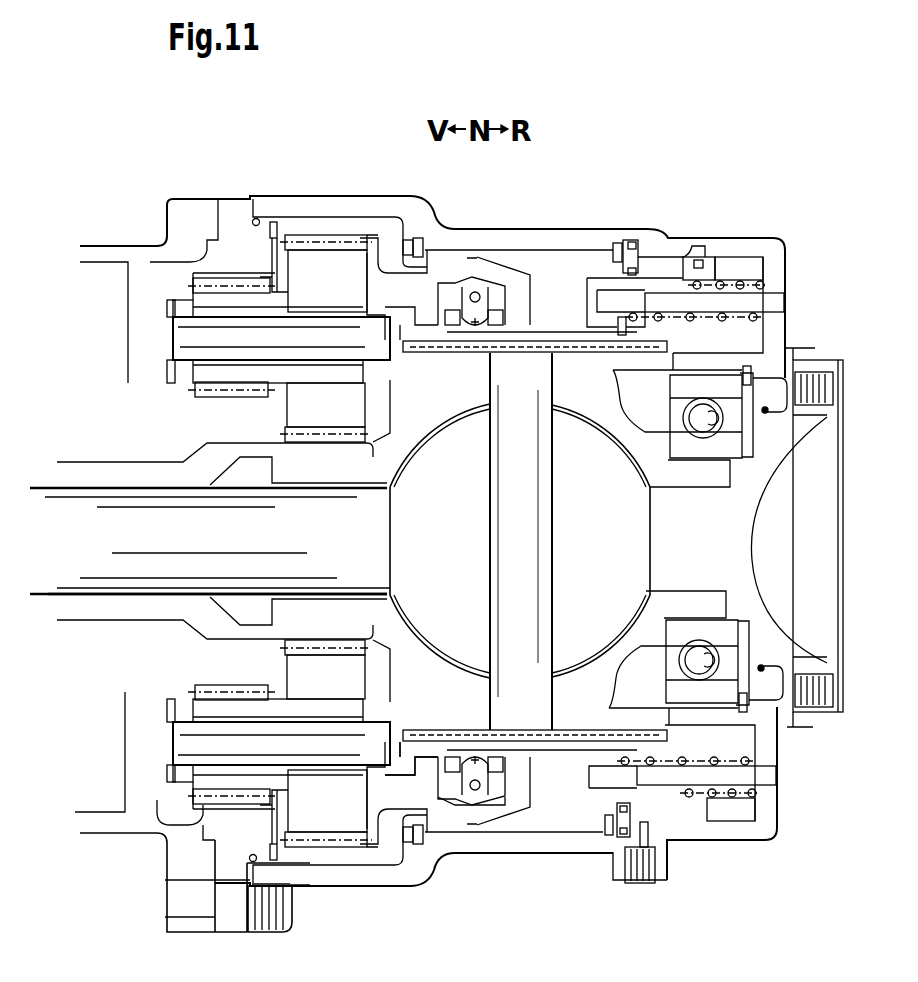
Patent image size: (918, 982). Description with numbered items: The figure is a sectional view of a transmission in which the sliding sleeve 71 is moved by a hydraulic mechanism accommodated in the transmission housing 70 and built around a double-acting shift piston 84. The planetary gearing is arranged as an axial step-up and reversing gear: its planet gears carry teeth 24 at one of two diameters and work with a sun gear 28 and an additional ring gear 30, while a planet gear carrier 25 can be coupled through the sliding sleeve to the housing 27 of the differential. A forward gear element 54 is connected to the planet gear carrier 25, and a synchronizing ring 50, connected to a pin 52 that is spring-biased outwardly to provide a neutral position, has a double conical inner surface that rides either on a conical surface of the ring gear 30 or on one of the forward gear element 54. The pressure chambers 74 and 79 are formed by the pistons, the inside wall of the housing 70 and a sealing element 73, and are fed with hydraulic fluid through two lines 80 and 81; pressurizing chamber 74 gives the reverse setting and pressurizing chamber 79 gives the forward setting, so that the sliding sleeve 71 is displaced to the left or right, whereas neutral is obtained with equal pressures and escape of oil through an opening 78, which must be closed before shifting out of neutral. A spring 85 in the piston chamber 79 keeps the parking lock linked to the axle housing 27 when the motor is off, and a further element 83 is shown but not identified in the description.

The teeth 24 is at (312, 270).
The planet gear carrier 25 is at (205, 343).
The differential housing 27 is at (710, 603).
The sun gear 28 is at (160, 477).
The additional ring gear 30 is at (485, 808).
The synchronizing ring 50 is at (490, 780).
The pin 52 is at (477, 293).
The forward gear element 54 is at (430, 798).
The transmission housing 70 is at (763, 805).
The sliding sleeve 71 is at (552, 338).
The sealing element 73 is at (622, 820).
The pressure chamber 74 is at (663, 263).
The opening 78 is at (700, 258).
The piston chamber 79 is at (735, 265).
The line 80 is at (775, 275).
The line 81 is at (645, 885).
The washer 83 is at (608, 330).
The double-acting shift piston 84 is at (707, 282).
The spring 85 is at (757, 317).